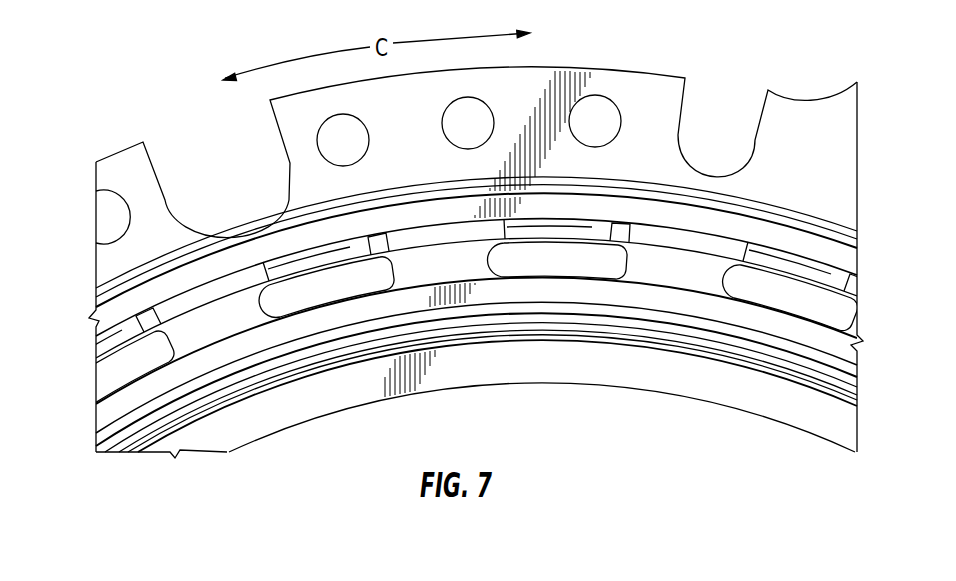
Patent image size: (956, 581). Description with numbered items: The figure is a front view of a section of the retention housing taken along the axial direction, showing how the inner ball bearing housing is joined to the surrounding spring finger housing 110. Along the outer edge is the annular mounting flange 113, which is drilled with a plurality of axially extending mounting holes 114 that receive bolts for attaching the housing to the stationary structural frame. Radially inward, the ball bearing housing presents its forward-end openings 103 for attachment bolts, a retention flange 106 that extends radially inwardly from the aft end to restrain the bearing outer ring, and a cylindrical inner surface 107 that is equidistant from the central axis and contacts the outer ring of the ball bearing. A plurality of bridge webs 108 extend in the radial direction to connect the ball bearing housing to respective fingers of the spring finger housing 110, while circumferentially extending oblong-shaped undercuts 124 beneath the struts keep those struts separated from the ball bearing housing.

The openings 103 is at (784, 345).
The retention flange 106 is at (647, 375).
The cylindrical inner surface 107 is at (602, 345).
The bridge webs 108 is at (425, 270).
The spring finger housing 110 is at (80, 334).
The annular mounting flange 113 is at (660, 98).
The mounting holes 114 is at (572, 128).
The undercuts 124 is at (793, 300).